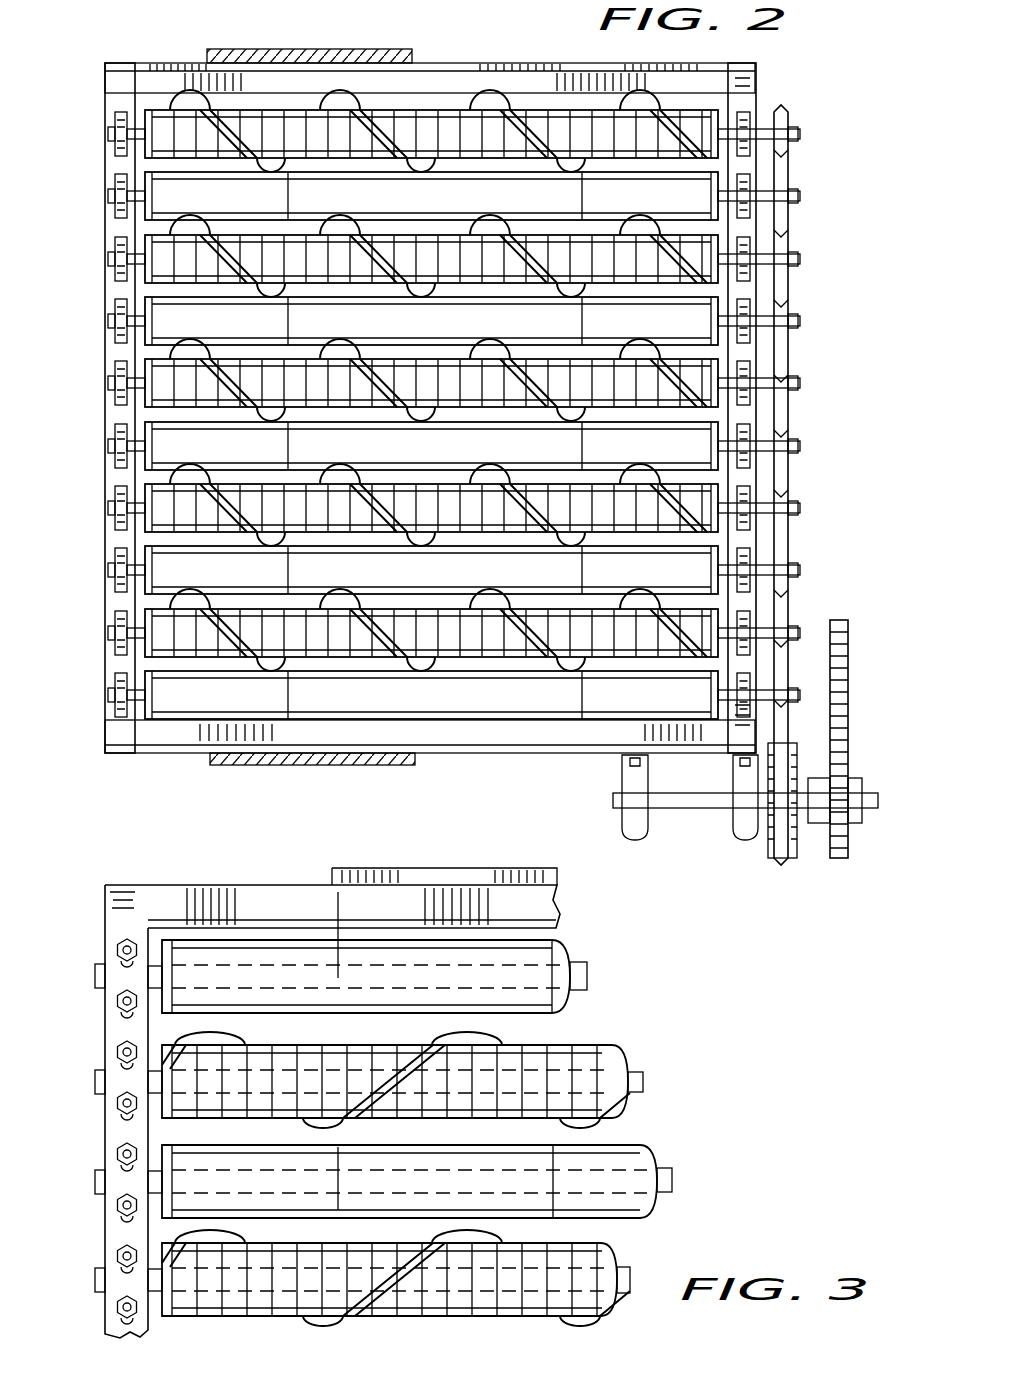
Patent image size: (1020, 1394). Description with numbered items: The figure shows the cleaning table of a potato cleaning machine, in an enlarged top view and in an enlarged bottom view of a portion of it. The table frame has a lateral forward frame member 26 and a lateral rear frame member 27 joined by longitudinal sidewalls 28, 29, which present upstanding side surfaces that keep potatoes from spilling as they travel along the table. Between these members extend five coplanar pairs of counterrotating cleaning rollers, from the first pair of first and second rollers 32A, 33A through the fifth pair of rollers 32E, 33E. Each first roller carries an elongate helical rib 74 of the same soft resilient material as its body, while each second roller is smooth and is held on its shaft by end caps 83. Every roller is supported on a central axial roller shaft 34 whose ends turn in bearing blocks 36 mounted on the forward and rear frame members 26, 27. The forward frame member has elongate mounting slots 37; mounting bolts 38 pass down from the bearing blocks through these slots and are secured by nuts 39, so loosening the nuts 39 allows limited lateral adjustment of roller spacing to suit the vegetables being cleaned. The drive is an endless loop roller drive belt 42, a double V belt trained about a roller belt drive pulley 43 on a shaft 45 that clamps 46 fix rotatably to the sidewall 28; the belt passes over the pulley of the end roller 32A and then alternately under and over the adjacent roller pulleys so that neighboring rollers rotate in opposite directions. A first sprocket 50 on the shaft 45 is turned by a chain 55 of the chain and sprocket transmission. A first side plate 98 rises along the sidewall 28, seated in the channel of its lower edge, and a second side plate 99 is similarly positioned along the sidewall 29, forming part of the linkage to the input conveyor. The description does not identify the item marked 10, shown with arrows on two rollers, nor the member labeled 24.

In FIG. 3, the product flow direction 10 is at (380, 905).
In FIG. 3, the frame 24 is at (242, 885).
In FIG. 2, the lateral forward frame member 26 is at (118, 415).
In FIG. 2, the lateral rear frame member 27 is at (770, 80).
In FIG. 2, the longitudinal sidewall 28 is at (465, 733).
In FIG. 2, the longitudinal sidewall 29 is at (505, 62).
In FIG. 2, the first roller 32A is at (162, 122).
In FIG. 2, the first roller 32E is at (168, 633).
In FIG. 3, the first roller 32E is at (188, 1110).
In FIG. 2, the second roller 33A is at (160, 245).
In FIG. 2, the second roller 33E is at (185, 719).
In FIG. 3, the second roller 33E is at (190, 963).
In FIG. 2, the roller shaft 34 is at (797, 312).
In FIG. 2, the bearing block 36 is at (748, 185).
In FIG. 3, the bearing block 36 is at (118, 1027).
In FIG. 3, the elongate mounting slot 37 is at (122, 945).
In FIG. 3, the mounting bolt 38 is at (118, 951).
In FIG. 3, the nut 39 is at (107, 975).
In FIG. 2, the endless loop roller drive belt 42 is at (787, 600).
In FIG. 2, the roller belt drive pulley 43 is at (781, 866).
In FIG. 2, the shaft 45 is at (712, 806).
In FIG. 2, the clamp 46 is at (632, 780).
In FIG. 2, the first sprocket 50 is at (850, 835).
In FIG. 2, the chain 55 is at (850, 674).
In FIG. 3, the helical rib 74 is at (368, 1322).
In FIG. 3, the end cap 83 is at (162, 1181).
In FIG. 2, the first side plate 98 is at (300, 756).
In FIG. 2, the second side plate 99 is at (315, 48).